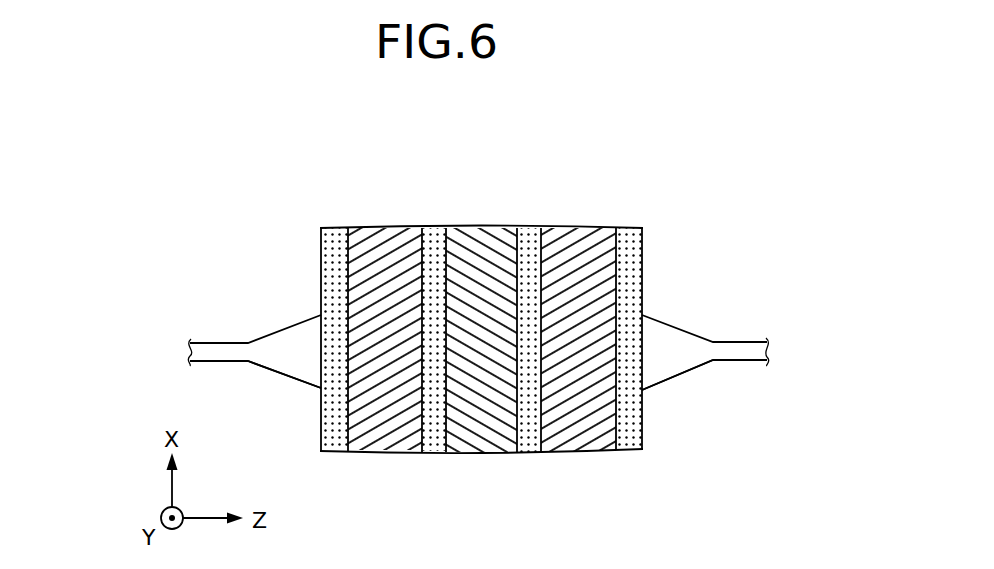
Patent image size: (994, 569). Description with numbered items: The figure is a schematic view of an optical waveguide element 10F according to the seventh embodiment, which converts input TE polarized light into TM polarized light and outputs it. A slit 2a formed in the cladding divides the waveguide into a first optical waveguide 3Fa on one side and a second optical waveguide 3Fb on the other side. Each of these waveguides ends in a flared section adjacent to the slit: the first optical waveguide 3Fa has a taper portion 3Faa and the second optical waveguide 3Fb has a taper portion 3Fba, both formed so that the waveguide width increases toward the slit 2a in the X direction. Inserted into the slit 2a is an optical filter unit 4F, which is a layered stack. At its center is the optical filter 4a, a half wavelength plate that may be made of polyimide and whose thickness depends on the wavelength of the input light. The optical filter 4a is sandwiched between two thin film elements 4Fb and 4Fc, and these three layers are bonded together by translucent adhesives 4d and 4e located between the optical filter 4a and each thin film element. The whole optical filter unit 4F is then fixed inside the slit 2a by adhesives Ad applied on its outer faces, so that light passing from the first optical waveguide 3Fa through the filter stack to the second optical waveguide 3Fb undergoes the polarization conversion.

The optical waveguide element 10F is at (663, 172).
The optical filter unit 4F is at (520, 155).
The thin film element 4Fb is at (381, 229).
The optical filter 4a is at (481, 230).
The thin film element 4Fc is at (589, 230).
The translucent adhesive 4d is at (430, 451).
The translucent adhesive 4e is at (527, 451).
The slit 2a is at (628, 258).
The adhesive Ad is at (333, 449).
The first optical waveguide 3Fa is at (245, 312).
The taper portion 3Faa is at (277, 369).
The second optical waveguide 3Fb is at (732, 322).
The taper portion 3Fba is at (682, 377).